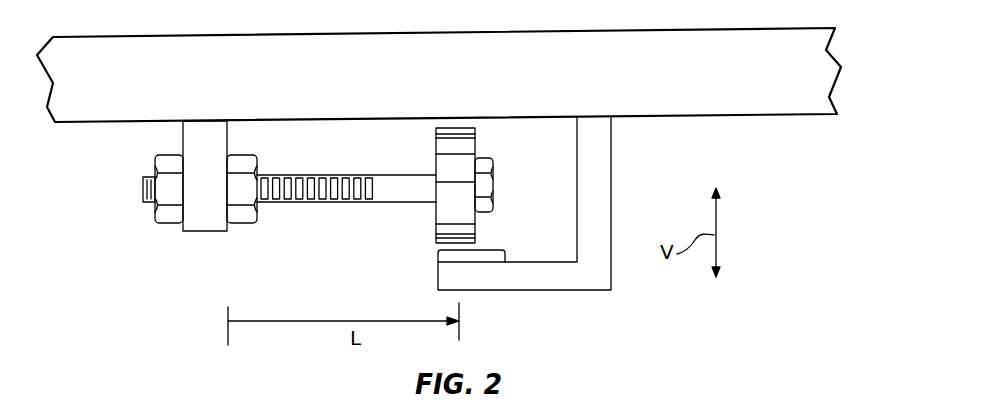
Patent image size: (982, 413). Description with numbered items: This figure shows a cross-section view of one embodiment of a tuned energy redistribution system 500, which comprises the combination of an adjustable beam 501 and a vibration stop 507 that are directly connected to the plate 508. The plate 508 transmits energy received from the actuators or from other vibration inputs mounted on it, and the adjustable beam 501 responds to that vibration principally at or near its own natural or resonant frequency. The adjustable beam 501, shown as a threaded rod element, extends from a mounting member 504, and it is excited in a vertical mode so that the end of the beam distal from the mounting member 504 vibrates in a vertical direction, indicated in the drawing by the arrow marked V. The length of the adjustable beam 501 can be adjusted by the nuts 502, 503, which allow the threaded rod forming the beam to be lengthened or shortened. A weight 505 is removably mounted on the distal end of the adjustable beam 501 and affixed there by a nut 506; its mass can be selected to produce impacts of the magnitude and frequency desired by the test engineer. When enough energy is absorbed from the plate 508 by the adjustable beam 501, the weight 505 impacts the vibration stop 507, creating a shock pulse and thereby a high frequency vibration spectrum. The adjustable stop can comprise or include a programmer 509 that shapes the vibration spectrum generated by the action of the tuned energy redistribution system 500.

The tuned energy redistribution system 500 is at (450, 165).
The adjustable beam 501 is at (337, 203).
The nut 502 is at (257, 152).
The nut 503 is at (151, 163).
The mounting member 504 is at (183, 135).
The weight 505 is at (436, 221).
The nut 506 is at (483, 191).
The vibration stop 507 is at (611, 176).
The plate 508 is at (737, 117).
The programmer 509 is at (438, 256).